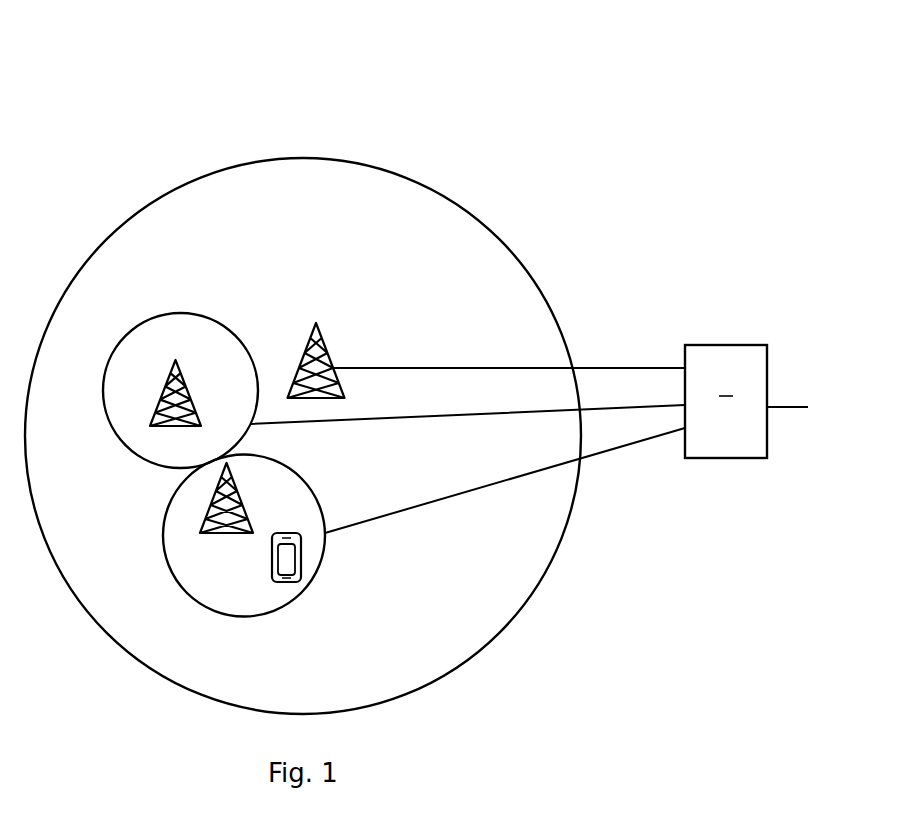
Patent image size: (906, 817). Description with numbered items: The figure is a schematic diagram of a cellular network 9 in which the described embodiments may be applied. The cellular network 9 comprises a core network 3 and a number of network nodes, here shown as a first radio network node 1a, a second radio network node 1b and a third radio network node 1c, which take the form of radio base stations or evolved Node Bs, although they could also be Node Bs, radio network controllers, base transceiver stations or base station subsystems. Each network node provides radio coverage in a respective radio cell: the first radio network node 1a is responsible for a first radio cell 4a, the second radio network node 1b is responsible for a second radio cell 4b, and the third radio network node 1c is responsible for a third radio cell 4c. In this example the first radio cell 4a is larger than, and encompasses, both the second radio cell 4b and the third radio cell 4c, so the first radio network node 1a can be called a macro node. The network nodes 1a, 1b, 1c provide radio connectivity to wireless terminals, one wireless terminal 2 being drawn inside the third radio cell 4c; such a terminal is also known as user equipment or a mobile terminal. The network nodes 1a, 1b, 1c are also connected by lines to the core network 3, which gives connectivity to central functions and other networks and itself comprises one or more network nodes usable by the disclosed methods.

The cellular network 9 is at (676, 121).
The first radio cell 4a is at (440, 192).
The second radio cell 4b is at (209, 317).
The third radio cell 4c is at (320, 503).
The first radio network node 1a is at (325, 348).
The second radio network node 1b is at (197, 413).
The third radio network node 1c is at (245, 519).
The wireless terminal 2 is at (268, 553).
The core network 3 is at (529, 439).